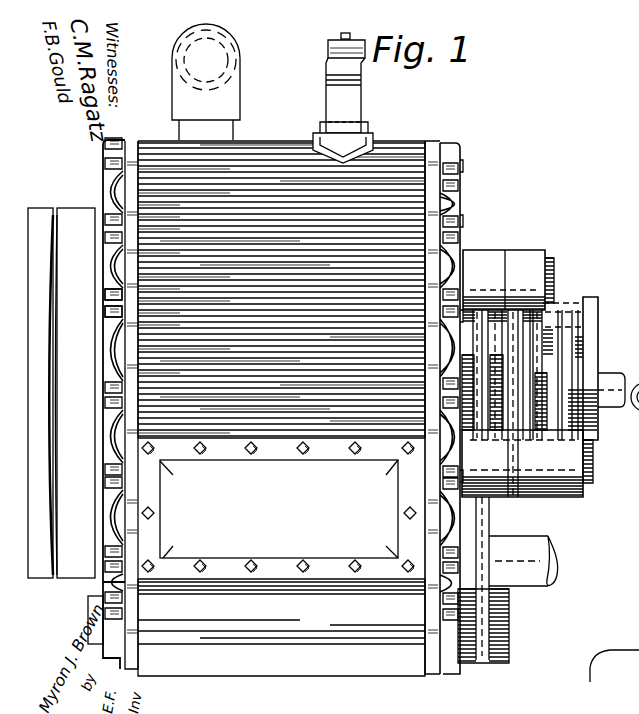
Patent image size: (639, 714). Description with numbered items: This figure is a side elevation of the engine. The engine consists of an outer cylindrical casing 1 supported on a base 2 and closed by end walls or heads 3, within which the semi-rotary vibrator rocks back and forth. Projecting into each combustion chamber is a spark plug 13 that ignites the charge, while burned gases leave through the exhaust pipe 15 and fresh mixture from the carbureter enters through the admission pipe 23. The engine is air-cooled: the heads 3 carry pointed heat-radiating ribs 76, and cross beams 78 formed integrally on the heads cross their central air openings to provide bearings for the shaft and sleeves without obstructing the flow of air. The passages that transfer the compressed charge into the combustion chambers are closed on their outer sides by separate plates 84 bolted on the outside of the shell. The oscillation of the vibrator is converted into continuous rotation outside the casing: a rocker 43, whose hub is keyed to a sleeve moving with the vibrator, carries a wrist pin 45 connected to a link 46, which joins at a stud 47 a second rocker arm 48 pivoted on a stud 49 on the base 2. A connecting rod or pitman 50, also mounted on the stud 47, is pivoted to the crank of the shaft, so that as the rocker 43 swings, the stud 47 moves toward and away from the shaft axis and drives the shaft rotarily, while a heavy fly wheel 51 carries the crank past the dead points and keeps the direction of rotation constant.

The outer cylindrical casing 1 is at (381, 168).
The base 2 is at (398, 663).
The end walls or heads 3 is at (458, 208).
The spark plug 13 is at (353, 99).
The exhaust pipe 15 is at (236, 58).
The admission pipe 23 is at (536, 548).
The rocker 43 is at (490, 333).
The wrist pin 45 is at (553, 282).
The link 46 is at (528, 372).
The stud 47 is at (590, 474).
The second rocker arm 48 is at (493, 526).
The stud 49 is at (509, 629).
The connecting rod or pitman 50 is at (570, 418).
The fly wheel or balance wheel 51 is at (70, 222).
The heat-radiating ribs 76 is at (112, 338).
The cross beams 78 is at (453, 253).
The plates 84 is at (281, 508).